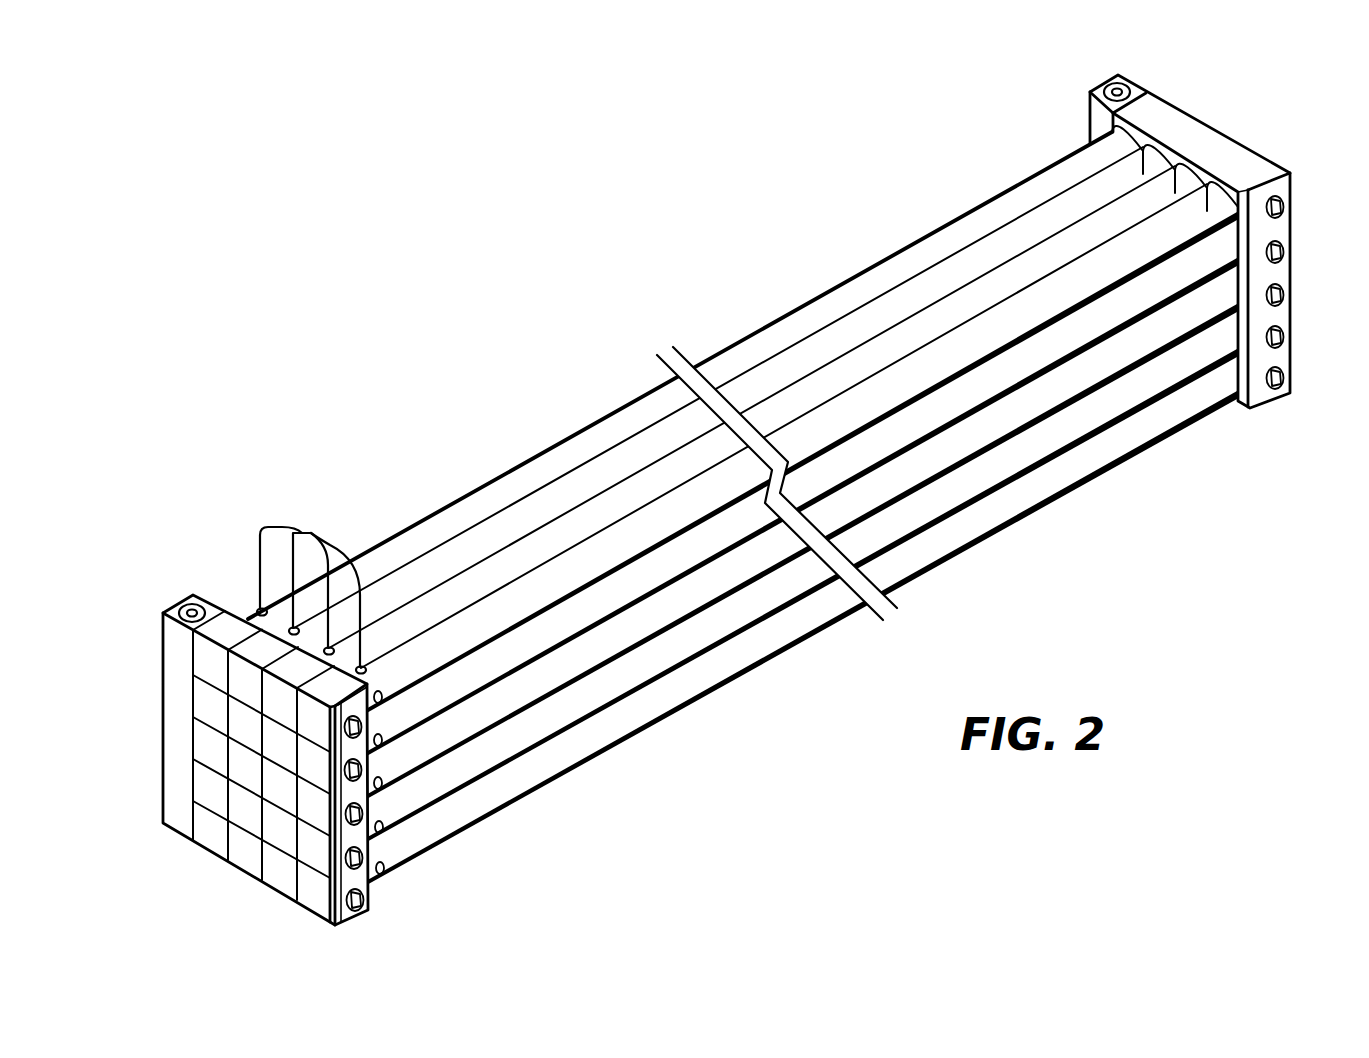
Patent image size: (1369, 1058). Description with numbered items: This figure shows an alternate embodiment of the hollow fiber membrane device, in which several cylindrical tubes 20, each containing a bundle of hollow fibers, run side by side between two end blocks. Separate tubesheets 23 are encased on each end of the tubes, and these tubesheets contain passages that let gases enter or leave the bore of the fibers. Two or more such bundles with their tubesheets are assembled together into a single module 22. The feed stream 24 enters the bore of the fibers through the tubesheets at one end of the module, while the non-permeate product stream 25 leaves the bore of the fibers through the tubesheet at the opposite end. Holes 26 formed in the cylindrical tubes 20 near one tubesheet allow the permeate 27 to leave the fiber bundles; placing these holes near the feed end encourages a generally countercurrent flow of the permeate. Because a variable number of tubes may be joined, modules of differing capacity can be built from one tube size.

The cylindrical tubes 20 is at (1097, 405).
The module 22 is at (735, 338).
The tubesheets 23 is at (318, 888).
The feed stream 24 is at (192, 606).
The non-permeate product stream 25 is at (1117, 92).
The holes 26 is at (383, 832).
The permeate 27 is at (311, 533).